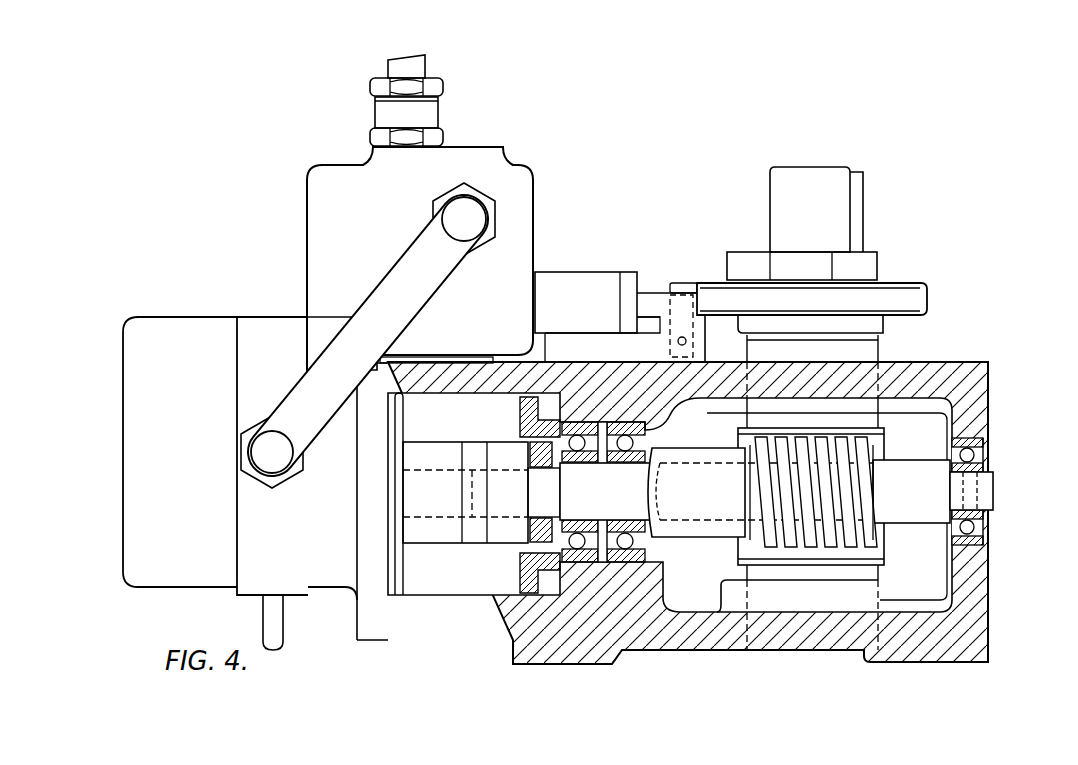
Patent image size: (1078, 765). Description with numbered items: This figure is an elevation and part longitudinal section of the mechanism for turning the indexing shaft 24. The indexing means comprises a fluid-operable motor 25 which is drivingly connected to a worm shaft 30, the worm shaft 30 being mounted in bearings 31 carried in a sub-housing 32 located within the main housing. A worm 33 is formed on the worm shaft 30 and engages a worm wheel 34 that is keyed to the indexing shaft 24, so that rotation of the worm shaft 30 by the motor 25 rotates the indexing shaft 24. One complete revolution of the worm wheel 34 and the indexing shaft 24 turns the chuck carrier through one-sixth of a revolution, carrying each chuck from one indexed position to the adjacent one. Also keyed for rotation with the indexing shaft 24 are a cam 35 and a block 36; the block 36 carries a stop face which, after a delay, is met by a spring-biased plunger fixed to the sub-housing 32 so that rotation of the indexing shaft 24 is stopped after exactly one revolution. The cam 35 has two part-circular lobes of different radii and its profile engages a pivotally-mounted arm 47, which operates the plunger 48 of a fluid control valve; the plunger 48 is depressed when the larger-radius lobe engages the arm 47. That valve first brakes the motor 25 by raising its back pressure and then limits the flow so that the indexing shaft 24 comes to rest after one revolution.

The indexing shaft 24 is at (842, 212).
The fluid-operable motor 25 is at (135, 513).
The worm shaft 30 is at (702, 510).
The bearings 31 is at (524, 557).
The sub-housing 32 is at (982, 640).
The worm 33 is at (850, 488).
The worm wheel 34 is at (995, 485).
The cam 35 is at (918, 297).
The block 36 is at (873, 262).
The pivotally-mounted arm 47 is at (650, 290).
The plunger 48 is at (578, 280).